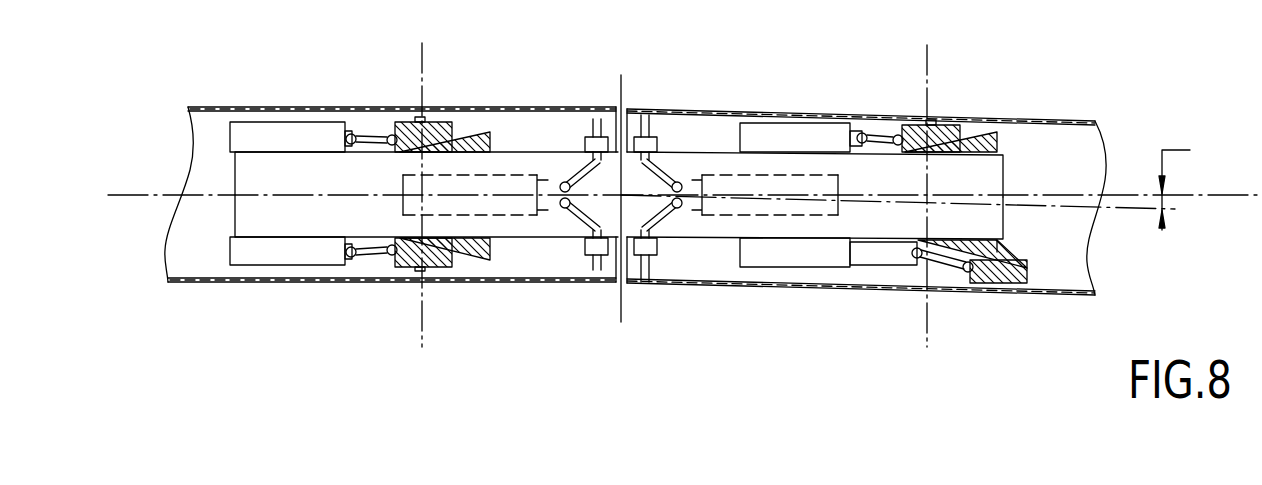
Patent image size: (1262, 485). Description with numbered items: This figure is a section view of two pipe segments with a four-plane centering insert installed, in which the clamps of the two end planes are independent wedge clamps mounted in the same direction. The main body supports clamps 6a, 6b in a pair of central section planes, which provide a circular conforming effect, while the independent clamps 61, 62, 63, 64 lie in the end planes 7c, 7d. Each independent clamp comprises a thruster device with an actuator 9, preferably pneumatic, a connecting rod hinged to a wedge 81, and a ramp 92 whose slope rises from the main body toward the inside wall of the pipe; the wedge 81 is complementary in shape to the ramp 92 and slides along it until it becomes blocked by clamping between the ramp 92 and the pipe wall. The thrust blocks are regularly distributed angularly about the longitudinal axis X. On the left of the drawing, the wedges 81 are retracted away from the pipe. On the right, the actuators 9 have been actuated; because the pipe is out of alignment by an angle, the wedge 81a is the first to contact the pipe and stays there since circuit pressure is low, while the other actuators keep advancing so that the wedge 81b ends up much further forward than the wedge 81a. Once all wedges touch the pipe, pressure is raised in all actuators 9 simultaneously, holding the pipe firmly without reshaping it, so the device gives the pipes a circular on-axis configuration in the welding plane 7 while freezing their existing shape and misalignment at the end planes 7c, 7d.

The welding plane 7 is at (621, 82).
The end centering plane 7c is at (422, 57).
The end centering plane 7d is at (927, 61).
The actuator 9 is at (281, 128).
The wedge 81 is at (370, 316).
The first wedge 81a is at (940, 122).
The further-advanced wedge 81b is at (1003, 277).
The ramp 92 is at (1033, 148).
The independent clamp 61 is at (296, 184).
The independent clamp 62 is at (296, 230).
The independent clamp 63 is at (964, 187).
The independent clamp 64 is at (959, 232).
The circular conforming clamp 6a is at (607, 210).
The circular conforming clamp 6b is at (710, 210).
The longitudinal axis X is at (685, 188).